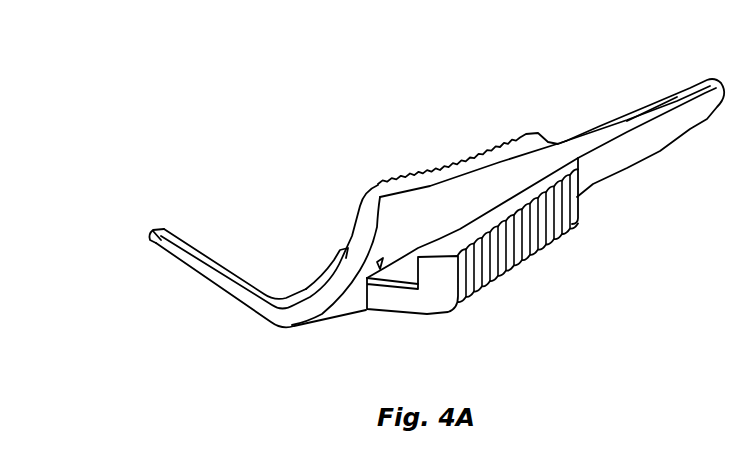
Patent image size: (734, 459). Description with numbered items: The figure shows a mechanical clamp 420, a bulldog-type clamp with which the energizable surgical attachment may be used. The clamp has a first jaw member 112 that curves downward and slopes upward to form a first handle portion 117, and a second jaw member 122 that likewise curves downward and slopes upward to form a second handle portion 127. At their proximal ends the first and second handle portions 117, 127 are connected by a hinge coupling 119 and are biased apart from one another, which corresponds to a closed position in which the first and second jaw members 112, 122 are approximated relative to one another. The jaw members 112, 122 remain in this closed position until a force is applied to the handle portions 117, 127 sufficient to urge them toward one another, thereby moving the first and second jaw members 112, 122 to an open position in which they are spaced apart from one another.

The first jaw member 112 is at (155, 228).
The first handle portion 117 is at (549, 247).
The hinge coupling 119 is at (347, 246).
The second jaw member 122 is at (207, 283).
The second handle portion 127 is at (507, 142).
The mechanical clamp 420 is at (647, 107).